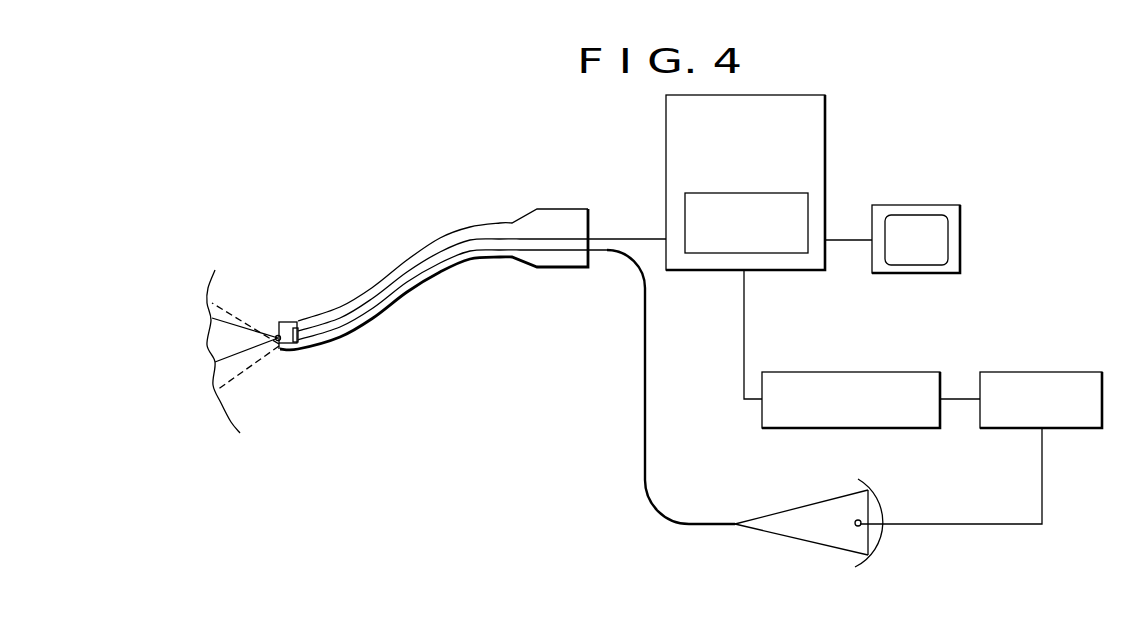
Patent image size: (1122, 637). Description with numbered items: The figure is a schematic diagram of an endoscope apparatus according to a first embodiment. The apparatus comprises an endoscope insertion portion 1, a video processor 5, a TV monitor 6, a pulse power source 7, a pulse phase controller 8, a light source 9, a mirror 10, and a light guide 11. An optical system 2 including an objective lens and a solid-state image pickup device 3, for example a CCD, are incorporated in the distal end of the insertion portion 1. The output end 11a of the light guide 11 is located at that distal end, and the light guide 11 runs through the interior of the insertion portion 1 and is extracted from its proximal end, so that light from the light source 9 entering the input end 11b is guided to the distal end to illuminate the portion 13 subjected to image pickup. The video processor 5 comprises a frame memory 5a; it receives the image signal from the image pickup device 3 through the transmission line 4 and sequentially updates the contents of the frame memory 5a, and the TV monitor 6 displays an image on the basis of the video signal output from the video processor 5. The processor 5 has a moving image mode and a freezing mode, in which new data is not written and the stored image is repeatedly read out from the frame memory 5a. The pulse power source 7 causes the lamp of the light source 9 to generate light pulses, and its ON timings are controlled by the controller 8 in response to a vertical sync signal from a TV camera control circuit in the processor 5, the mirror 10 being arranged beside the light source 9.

The endoscope insertion portion 1 is at (433, 238).
The optical system 2 is at (277, 335).
The solid-state image pickup device 3 is at (295, 325).
The transmission line 4 is at (380, 297).
The video processor 5 is at (793, 94).
The frame memory 5a is at (760, 193).
The TV monitor 6 is at (913, 205).
The pulse power source 7 is at (1037, 372).
The pulse phase controller 8 is at (847, 372).
The light source 9 is at (853, 523).
The mirror 10 is at (865, 562).
The light guide 11 is at (640, 458).
The output end of light guide 11a is at (279, 352).
The input end of light guide 11b is at (735, 527).
The portion subjected to image pickup 13 is at (235, 437).